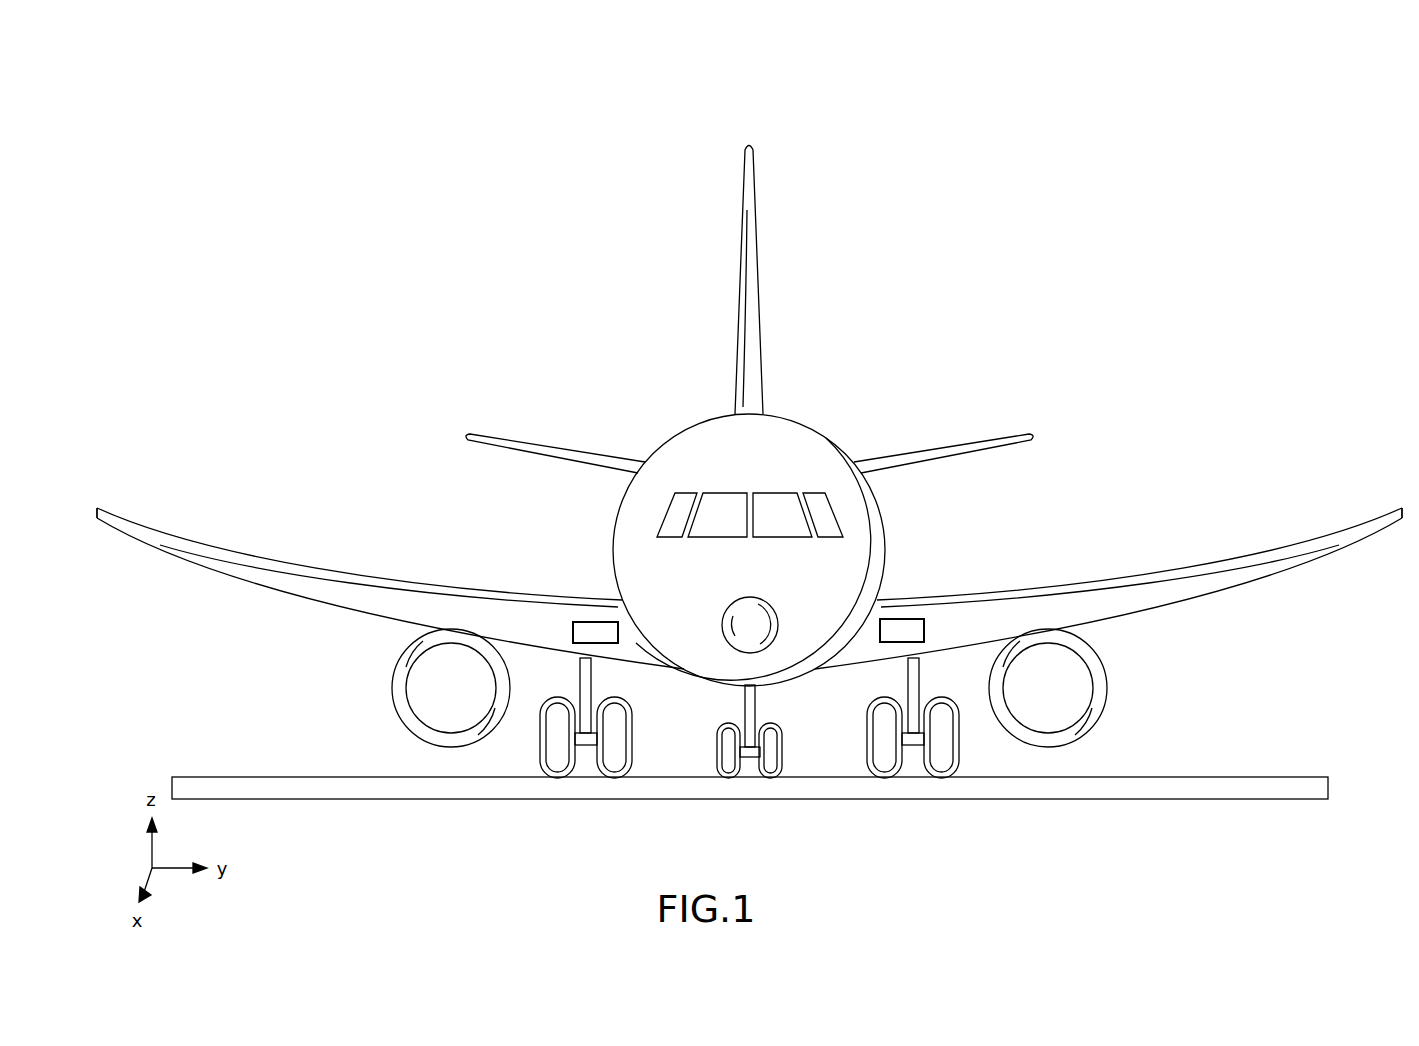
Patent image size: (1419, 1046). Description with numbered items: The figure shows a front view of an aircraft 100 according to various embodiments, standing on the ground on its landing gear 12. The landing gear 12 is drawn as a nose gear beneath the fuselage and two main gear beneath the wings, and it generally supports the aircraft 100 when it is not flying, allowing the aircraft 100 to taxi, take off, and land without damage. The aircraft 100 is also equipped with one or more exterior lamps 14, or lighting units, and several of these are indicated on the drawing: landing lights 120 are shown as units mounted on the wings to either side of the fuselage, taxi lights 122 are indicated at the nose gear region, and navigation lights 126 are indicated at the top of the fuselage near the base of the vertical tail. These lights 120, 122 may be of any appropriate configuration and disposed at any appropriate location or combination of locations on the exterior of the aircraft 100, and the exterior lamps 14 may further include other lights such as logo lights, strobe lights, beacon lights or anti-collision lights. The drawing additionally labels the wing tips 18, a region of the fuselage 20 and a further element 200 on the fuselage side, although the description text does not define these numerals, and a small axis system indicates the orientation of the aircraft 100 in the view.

The aircraft 100 is at (603, 163).
The landing gear 12 is at (800, 720).
The exterior lamps 14 is at (943, 559).
The wingtip 18 is at (113, 514).
The fuselage 20 is at (628, 513).
The horizontal stabilizer 200 is at (627, 578).
The landing lights 120 is at (592, 633).
The taxi lights 122 is at (748, 703).
The navigation lights 126 is at (763, 428).